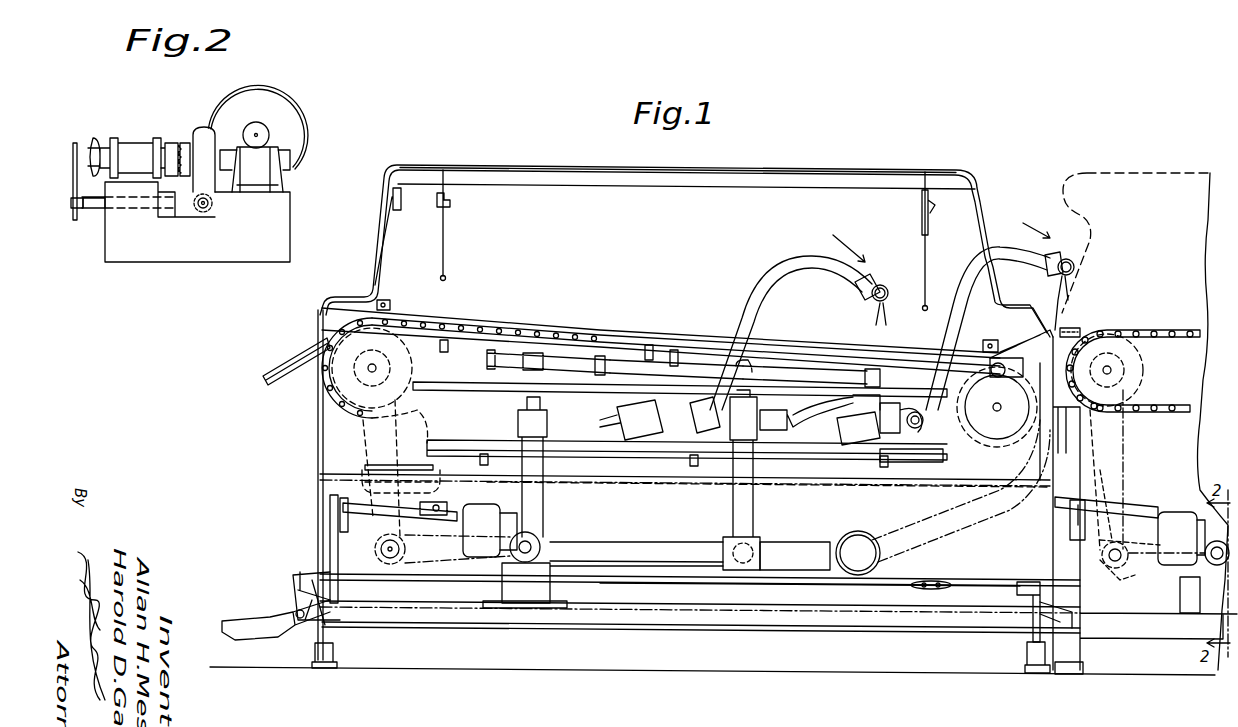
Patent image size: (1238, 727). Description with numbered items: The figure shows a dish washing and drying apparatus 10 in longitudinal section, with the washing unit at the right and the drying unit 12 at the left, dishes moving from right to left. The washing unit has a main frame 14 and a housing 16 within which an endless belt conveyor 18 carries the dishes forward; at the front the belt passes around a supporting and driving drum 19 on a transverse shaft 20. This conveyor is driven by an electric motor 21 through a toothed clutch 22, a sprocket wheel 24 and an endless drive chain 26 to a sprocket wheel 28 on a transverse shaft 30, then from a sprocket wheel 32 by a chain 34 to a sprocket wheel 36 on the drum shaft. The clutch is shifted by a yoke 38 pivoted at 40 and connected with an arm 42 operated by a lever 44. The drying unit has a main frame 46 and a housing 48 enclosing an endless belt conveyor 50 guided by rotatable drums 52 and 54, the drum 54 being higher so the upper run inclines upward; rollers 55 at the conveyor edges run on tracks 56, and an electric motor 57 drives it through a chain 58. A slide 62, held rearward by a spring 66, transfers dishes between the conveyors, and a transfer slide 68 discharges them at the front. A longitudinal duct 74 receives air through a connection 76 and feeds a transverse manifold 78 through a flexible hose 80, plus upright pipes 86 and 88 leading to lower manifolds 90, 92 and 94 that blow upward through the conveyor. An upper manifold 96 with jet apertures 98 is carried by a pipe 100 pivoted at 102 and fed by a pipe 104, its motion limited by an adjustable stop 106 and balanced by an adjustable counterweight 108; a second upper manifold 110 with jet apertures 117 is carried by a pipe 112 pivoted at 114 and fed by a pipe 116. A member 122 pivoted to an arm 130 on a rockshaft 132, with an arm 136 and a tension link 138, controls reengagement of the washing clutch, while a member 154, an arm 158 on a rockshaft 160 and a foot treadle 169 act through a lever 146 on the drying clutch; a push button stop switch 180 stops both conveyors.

In FIG. 1, the workpiece (tire) 10 is at (1128, 170).
In FIG. 1, the drying unit 12 is at (880, 170).
In FIG. 1, the main frame 14 is at (1100, 503).
In FIG. 1, the housing 16 is at (1173, 187).
In FIG. 1, the endless belt conveyor 18 is at (1150, 332).
In FIG. 1, the supporting and driving drum 19 is at (1147, 370).
In FIG. 1, the transverse shaft 20 is at (1108, 366).
In FIG. 2, the electric motor 21 is at (262, 88).
In FIG. 1, the electric motor 21 is at (1175, 512).
In FIG. 2, the toothed clutch 22 is at (183, 142).
In FIG. 2, the sprocket wheel 24 is at (101, 140).
In FIG. 1, the endless drive chain 26 is at (1130, 552).
In FIG. 1, the sprocket wheel 28 is at (1108, 576).
In FIG. 1, the transverse shaft 30 is at (1104, 566).
In FIG. 1, the sprocket wheel 32 is at (1125, 545).
In FIG. 1, the chain 34 is at (1125, 494).
In FIG. 1, the sprocket wheel 36 is at (1113, 381).
In FIG. 2, the yoke 38 is at (203, 130).
In FIG. 2, the pivot 40 is at (203, 212).
In FIG. 2, the arm 42 is at (95, 208).
In FIG. 2, the lever 44 is at (77, 143).
In FIG. 1, the lever 44 is at (1120, 510).
In FIG. 1, the main frame 46 is at (318, 530).
In FIG. 1, the housing 48 is at (717, 187).
In FIG. 1, the endless belt conveyor 50 is at (498, 325).
In FIG. 1, the rotatable drum 52 is at (962, 425).
In FIG. 1, the rotatable drum 54 is at (413, 364).
In FIG. 1, the rollers 55 is at (648, 348).
In FIG. 1, the tracks 56 is at (672, 354).
In FIG. 1, the electric motor 57 is at (487, 507).
In FIG. 1, the chain 58 is at (420, 522).
In FIG. 1, the slide 62 is at (1030, 353).
In FIG. 1, the spring 66 is at (368, 515).
In FIG. 1, the transfer slide 68 is at (298, 350).
In FIG. 1, the longitudinal duct 74 is at (792, 542).
In FIG. 1, the connection 76 is at (852, 533).
In FIG. 1, the transverse manifold 78 is at (1072, 333).
In FIG. 1, the flexible pipe or hose 80 is at (972, 522).
In FIG. 1, the upright pipe 86 is at (755, 503).
In FIG. 1, the upright pipe 88 is at (545, 500).
In FIG. 1, the manifold 90 is at (877, 366).
In FIG. 1, the manifold 92 is at (592, 362).
In FIG. 1, the manifold 94 is at (495, 361).
In FIG. 1, the upper manifold 96 is at (1072, 259).
In FIG. 1, the jet apertures 98 is at (1060, 280).
In FIG. 1, the pipe 100 is at (958, 272).
In FIG. 1, the pivotal axis 102 is at (928, 412).
In FIG. 1, the pipe 104 is at (798, 425).
In FIG. 1, the adjustable stop 106 is at (985, 352).
In FIG. 1, the adjustable counterweight 108 is at (853, 455).
In FIG. 1, the upper manifold 110 is at (888, 290).
In FIG. 1, the supporting member or pipe 112 is at (748, 310).
In FIG. 1, the pivot 114 is at (705, 425).
In FIG. 1, the pipe 116 is at (583, 420).
In FIG. 1, the jet apertures 117 is at (878, 305).
In FIG. 1, the member 122 is at (1072, 553).
In FIG. 1, the arm 130 is at (1062, 628).
In FIG. 1, the rockshaft 132 is at (1027, 644).
In FIG. 1, the arm 136 is at (1022, 600).
In FIG. 1, the tension link 138 is at (980, 583).
In FIG. 1, the lever 146 is at (357, 472).
In FIG. 1, the member 154 is at (338, 560).
In FIG. 1, the arm 158 is at (337, 625).
In FIG. 1, the transverse rockshaft 160 is at (315, 640).
In FIG. 1, the foot treadle 169 is at (242, 620).
In FIG. 1, the push button stop switch 180 is at (392, 197).